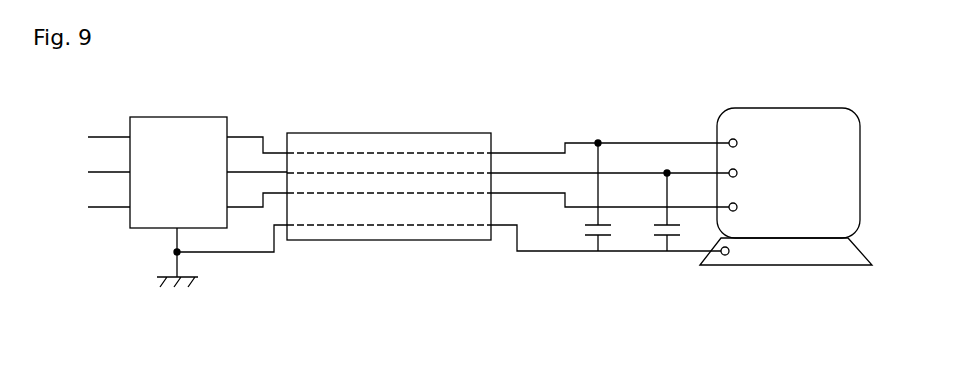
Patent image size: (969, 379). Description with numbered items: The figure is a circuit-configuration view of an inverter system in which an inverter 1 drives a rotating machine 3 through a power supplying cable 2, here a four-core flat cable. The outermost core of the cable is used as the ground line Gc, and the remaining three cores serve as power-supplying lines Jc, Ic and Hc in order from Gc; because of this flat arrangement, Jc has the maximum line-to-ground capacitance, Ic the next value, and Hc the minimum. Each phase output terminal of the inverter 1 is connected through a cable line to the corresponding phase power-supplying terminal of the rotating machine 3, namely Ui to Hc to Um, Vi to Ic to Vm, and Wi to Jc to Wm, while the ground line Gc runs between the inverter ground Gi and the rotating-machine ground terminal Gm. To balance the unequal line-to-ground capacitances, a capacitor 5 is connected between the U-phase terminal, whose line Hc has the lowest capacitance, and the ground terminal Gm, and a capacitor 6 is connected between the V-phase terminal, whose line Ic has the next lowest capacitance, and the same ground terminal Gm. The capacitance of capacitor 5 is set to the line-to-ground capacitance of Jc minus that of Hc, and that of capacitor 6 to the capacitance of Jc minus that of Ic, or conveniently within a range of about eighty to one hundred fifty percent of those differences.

The inverter 1 is at (150, 228).
The power supplying cable 2 is at (333, 240).
The rotating machine 3 is at (786, 211).
The capacitor 5 is at (575, 226).
The capacitor 6 is at (647, 226).
The power-supplying line Hc is at (327, 153).
The power-supplying line Ic is at (375, 173).
The power-supplying line Jc is at (422, 193).
The ground line Gc is at (438, 240).
The inverter ground Gi is at (222, 264).
The rotating-machine ground terminal Gm is at (742, 256).